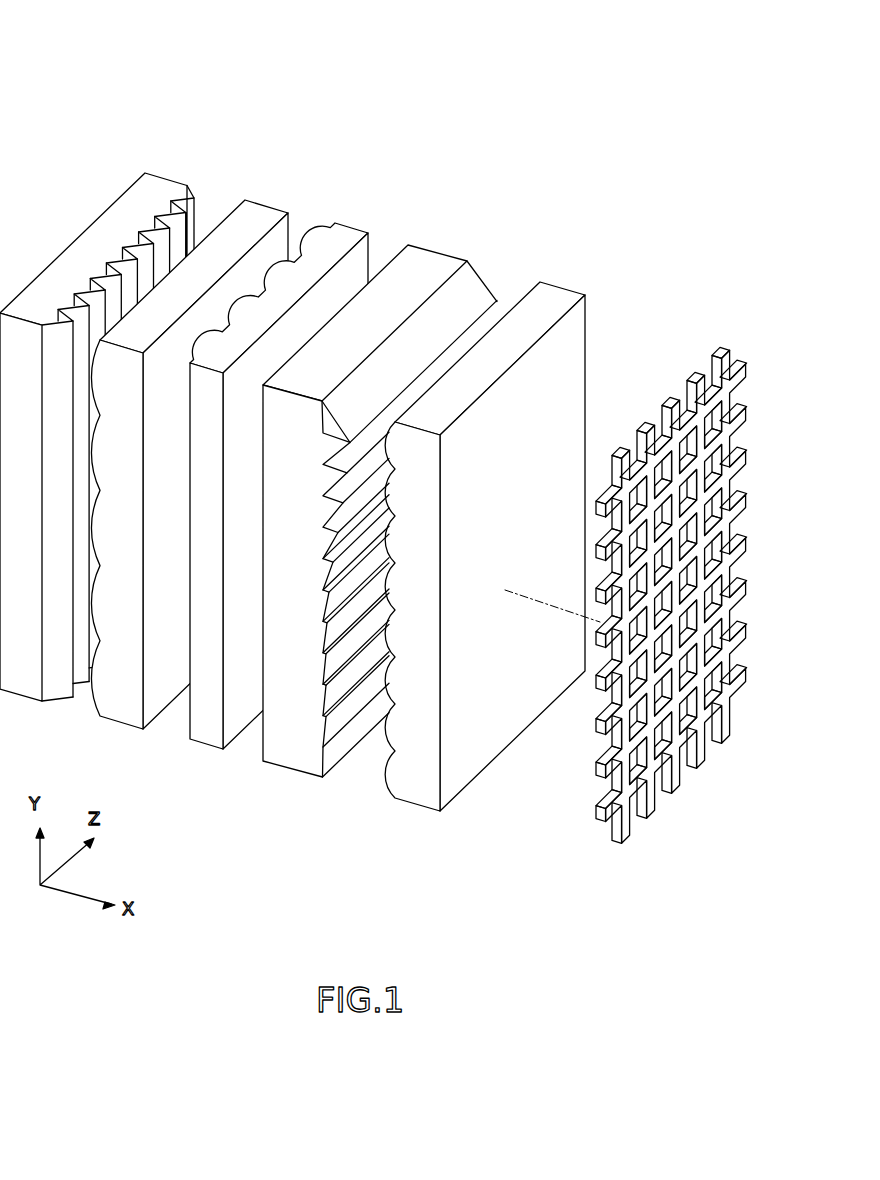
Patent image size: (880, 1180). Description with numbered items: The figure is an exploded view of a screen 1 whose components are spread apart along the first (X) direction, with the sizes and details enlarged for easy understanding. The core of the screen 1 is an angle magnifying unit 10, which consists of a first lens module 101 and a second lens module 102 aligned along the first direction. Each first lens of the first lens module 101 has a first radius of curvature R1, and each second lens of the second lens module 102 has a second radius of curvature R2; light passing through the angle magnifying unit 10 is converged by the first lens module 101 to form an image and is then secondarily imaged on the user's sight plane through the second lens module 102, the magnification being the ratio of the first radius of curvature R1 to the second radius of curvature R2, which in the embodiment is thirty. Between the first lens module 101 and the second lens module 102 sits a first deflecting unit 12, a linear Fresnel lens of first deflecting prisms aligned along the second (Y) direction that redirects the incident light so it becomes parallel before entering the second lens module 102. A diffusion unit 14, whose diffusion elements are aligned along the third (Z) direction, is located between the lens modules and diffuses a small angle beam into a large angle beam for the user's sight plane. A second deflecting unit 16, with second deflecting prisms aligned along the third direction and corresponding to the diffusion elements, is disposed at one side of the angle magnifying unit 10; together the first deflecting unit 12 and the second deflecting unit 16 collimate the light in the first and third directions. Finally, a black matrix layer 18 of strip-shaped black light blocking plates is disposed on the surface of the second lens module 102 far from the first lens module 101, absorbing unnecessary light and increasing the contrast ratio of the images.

The screen 1 is at (373, 427).
The angle magnifying unit 10 is at (339, 472).
The first lens module 101 is at (256, 212).
The second lens module 102 is at (486, 521).
The first deflecting unit 12 is at (300, 773).
The diffusion unit 14 is at (208, 748).
The second deflecting unit 16 is at (162, 183).
The black matrix layer 18 is at (722, 355).
The first radius of curvature R1 is at (93, 377).
The second radius of curvature R2 is at (387, 487).